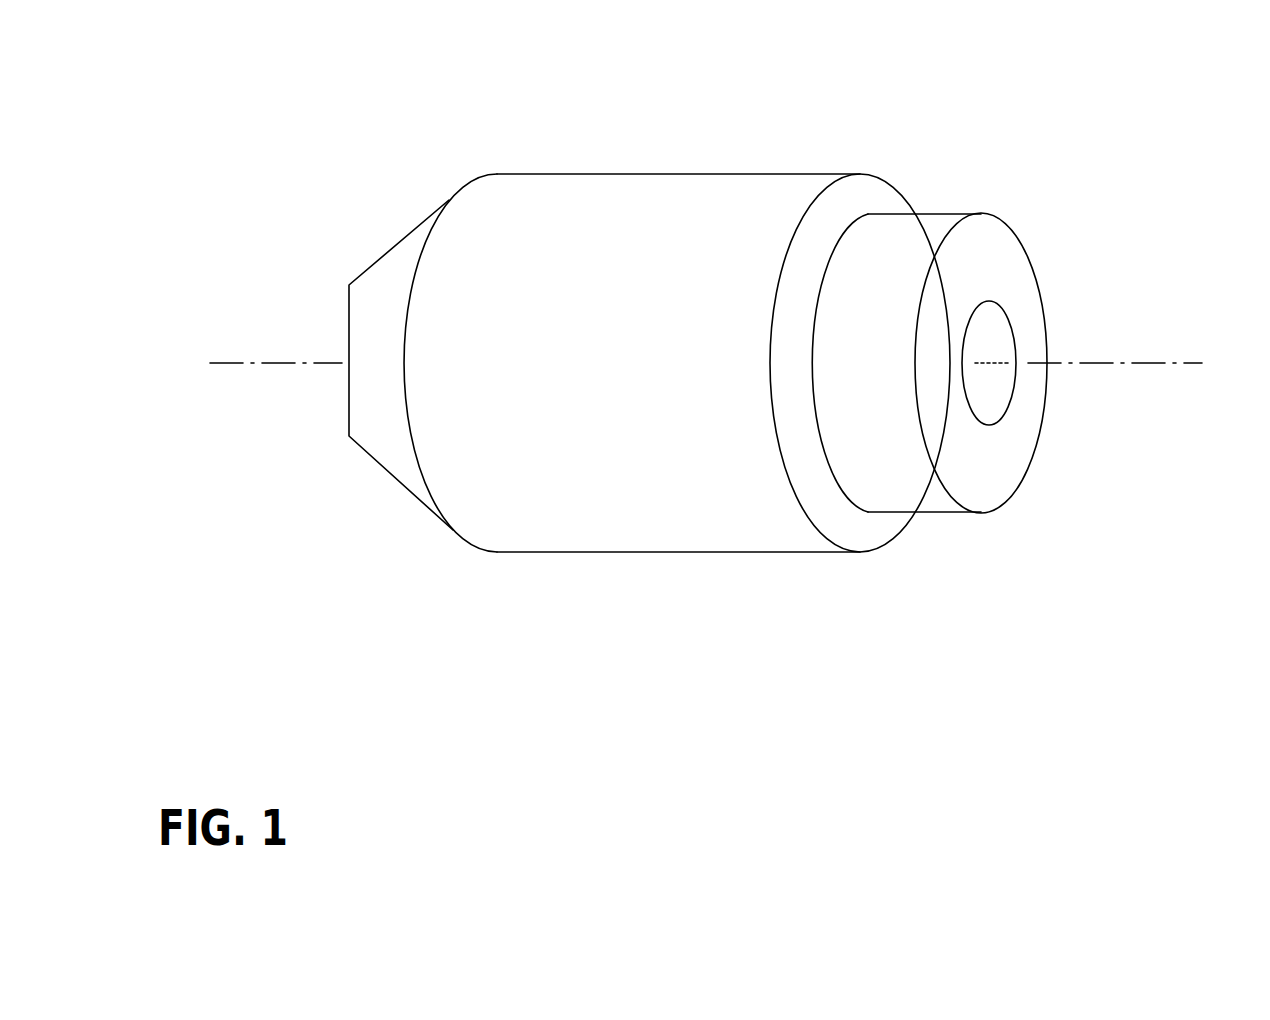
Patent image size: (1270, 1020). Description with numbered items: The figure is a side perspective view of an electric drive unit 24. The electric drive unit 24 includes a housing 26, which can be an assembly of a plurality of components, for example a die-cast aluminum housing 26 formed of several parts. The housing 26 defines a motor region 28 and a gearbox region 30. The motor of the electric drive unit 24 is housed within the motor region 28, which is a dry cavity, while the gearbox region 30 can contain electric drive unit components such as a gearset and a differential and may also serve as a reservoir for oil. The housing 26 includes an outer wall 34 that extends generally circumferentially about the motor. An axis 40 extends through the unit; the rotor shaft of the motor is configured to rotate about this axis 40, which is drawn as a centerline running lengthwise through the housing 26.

The electric drive unit 24 is at (696, 288).
The housing 26 is at (593, 204).
The motor region 28 is at (483, 225).
The gearbox region 30 is at (398, 258).
The outer wall 34 is at (680, 190).
The axis 40 is at (1153, 363).